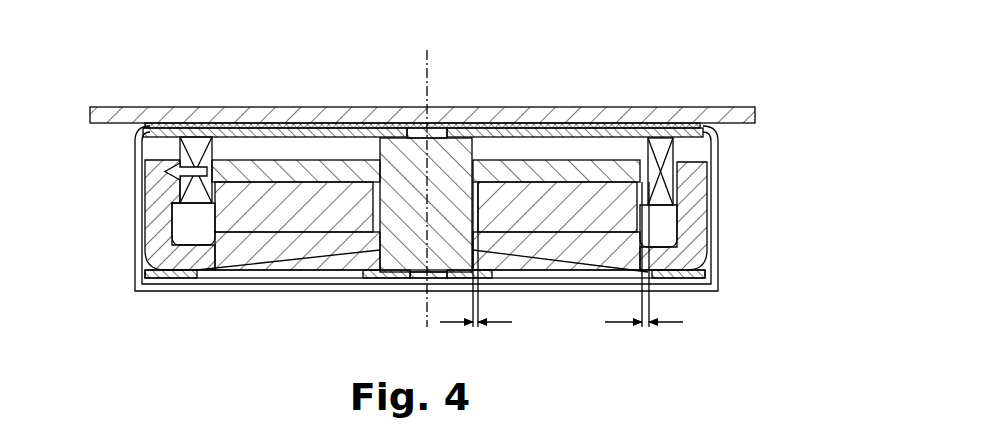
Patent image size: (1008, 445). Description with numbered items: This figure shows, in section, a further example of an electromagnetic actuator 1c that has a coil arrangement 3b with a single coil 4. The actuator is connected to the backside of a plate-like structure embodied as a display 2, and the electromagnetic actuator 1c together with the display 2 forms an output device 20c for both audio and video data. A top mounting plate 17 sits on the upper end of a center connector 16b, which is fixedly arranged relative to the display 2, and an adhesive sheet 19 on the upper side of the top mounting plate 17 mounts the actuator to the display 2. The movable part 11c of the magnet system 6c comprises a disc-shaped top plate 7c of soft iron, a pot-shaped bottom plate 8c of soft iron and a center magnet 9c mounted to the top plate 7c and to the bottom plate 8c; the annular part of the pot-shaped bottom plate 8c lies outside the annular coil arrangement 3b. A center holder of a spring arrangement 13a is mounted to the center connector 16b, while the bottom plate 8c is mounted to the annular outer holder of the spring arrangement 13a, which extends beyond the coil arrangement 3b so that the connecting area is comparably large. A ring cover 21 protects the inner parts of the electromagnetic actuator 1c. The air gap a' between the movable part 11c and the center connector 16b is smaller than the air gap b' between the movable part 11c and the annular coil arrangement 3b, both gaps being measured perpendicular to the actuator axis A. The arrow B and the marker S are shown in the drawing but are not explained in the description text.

The output device 20c is at (727, 65).
The electromagnetic actuator 1c is at (708, 318).
The display 2 is at (192, 112).
The adhesive sheet 19 is at (175, 123).
The top mounting plate 17 is at (573, 132).
The ring cover 21 is at (135, 235).
The magnet system 6c is at (850, 140).
The coil arrangement 3b is at (72, 128).
The coil 4 is at (186, 156).
The magnetic flux direction B is at (206, 166).
The top plate 7c is at (630, 166).
The center magnet 9c is at (630, 223).
The bottom plate 8c is at (690, 253).
The movable part 11c is at (790, 140).
The center connector 16b is at (462, 138).
The spring arrangement 13a is at (243, 275).
The actuator axis A is at (412, 188).
The gap S is at (368, 107).
The air gap a' is at (480, 254).
The air gap b' is at (640, 254).